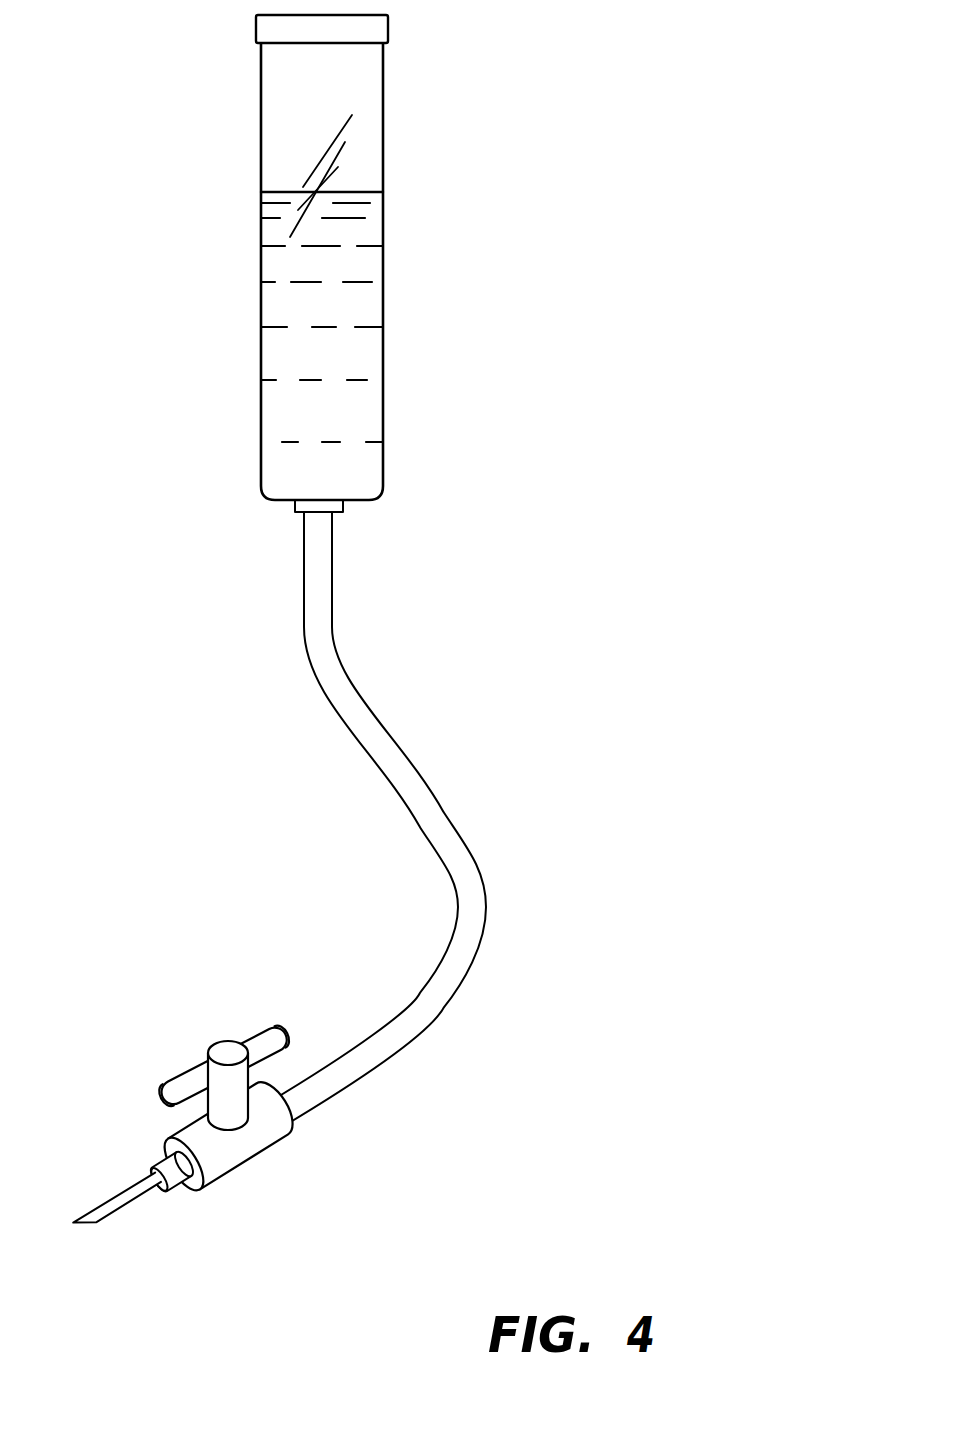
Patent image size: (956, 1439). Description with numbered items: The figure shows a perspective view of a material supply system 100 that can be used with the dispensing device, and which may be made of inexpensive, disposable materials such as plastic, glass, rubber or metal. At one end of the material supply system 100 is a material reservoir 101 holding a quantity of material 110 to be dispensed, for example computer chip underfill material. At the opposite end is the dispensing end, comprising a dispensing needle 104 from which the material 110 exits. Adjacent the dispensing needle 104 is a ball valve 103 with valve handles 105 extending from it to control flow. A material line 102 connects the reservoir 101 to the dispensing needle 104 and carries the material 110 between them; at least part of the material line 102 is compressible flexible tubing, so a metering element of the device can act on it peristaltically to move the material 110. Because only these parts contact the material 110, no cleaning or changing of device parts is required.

The material supply system 100 is at (689, 367).
The material reservoir 101 is at (414, 263).
The material 110 is at (383, 303).
The material line 102 is at (467, 967).
The ball valve 103 is at (225, 1114).
The dispensing needle 104 is at (133, 1195).
The valve handles 105 is at (265, 1040).